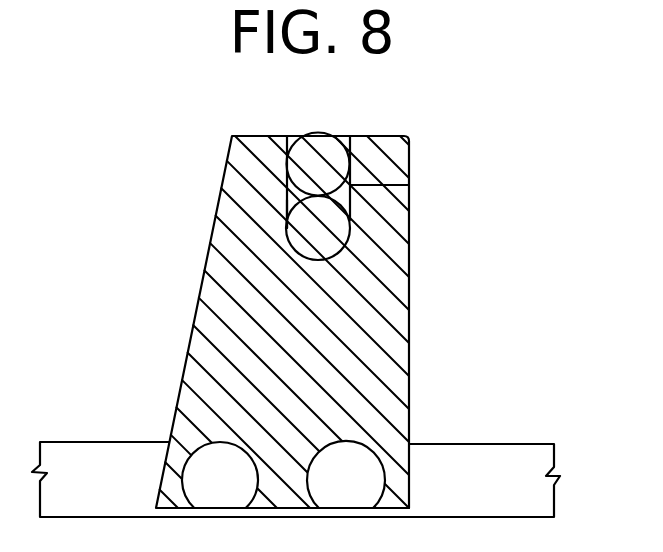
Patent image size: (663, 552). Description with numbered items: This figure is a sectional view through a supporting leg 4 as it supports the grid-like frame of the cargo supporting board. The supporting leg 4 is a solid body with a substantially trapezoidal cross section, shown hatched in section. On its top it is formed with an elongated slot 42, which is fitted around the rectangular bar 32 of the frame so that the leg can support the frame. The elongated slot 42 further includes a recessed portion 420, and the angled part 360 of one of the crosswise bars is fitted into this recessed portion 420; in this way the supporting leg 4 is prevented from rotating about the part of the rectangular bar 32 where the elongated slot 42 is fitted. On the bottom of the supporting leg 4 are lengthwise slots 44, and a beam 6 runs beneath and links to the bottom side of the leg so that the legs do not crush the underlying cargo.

The supporting leg 4 is at (192, 329).
The beam 6 is at (107, 455).
The rectangular bar 32 is at (322, 148).
The elongated slot 42 is at (392, 188).
The lengthwise slot 44 is at (207, 442).
The angled end of crosswise bar 360 is at (330, 233).
The recessed portion 420 is at (290, 228).